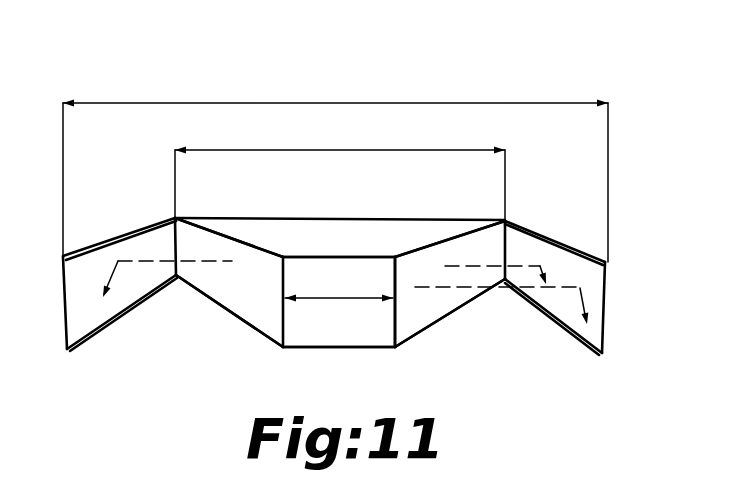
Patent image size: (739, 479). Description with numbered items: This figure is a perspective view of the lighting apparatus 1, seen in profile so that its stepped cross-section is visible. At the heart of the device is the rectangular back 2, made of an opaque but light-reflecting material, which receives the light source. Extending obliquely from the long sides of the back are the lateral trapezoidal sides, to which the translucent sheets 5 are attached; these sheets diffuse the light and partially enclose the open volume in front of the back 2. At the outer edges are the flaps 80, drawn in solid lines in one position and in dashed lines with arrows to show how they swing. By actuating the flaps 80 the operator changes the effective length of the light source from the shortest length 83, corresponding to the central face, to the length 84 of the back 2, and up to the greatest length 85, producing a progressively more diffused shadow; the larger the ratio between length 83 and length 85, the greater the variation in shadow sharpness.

The lighting apparatus 1 is at (368, 137).
The rectangular back 2 is at (381, 207).
The translucent sheets 5 is at (246, 304).
The flaps 80 is at (101, 315).
The length of face 83 is at (352, 295).
The length of bottom part 84 is at (290, 148).
The maximum effective length 85 is at (374, 103).